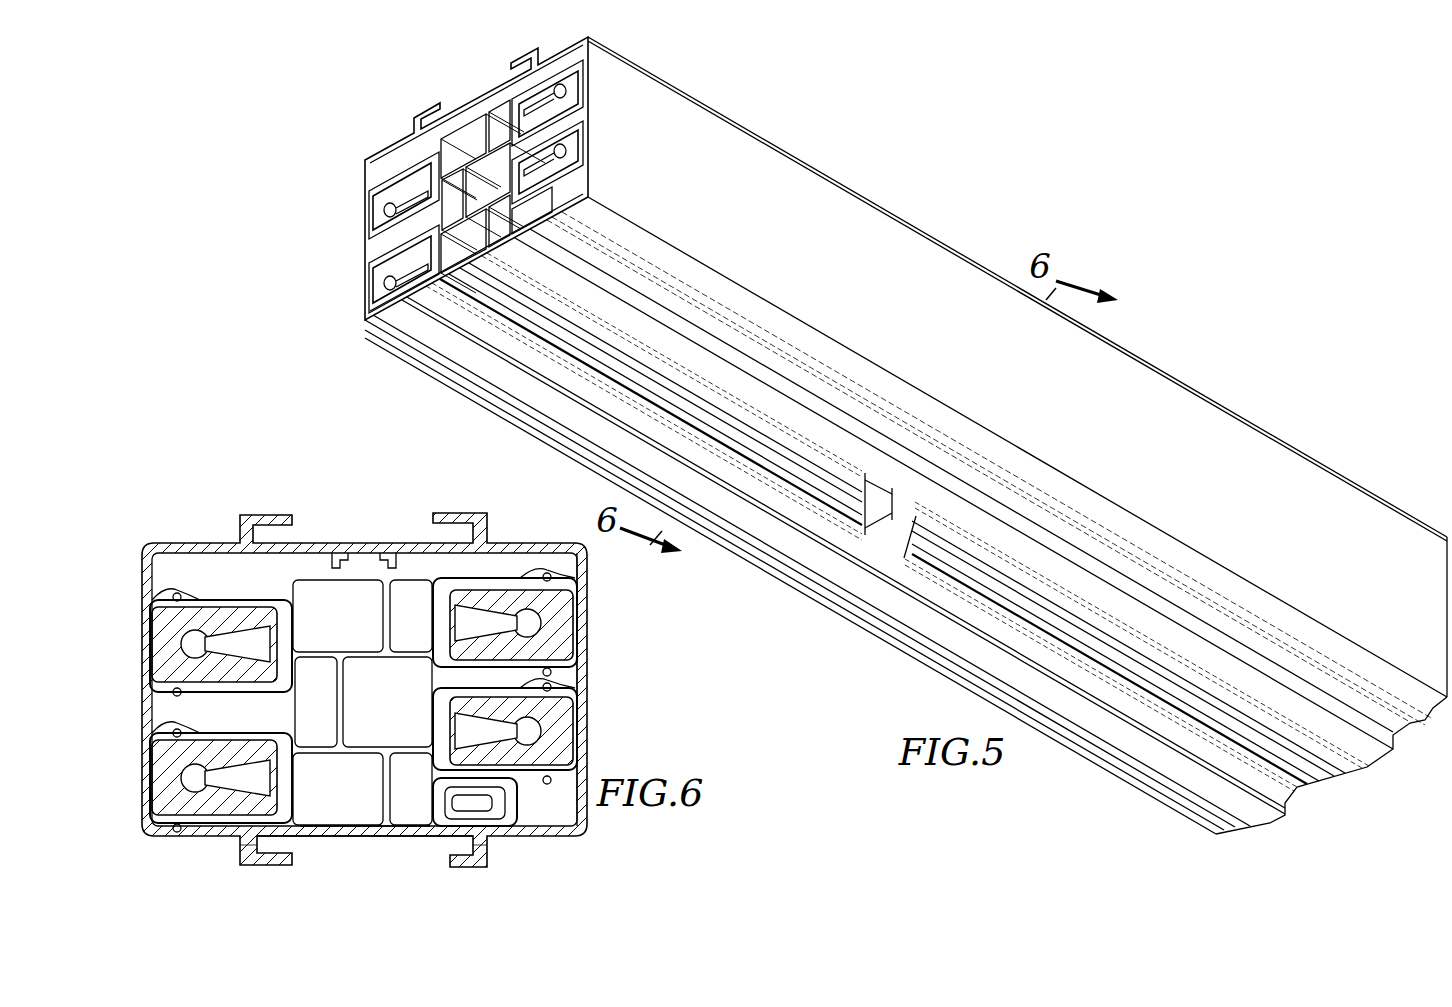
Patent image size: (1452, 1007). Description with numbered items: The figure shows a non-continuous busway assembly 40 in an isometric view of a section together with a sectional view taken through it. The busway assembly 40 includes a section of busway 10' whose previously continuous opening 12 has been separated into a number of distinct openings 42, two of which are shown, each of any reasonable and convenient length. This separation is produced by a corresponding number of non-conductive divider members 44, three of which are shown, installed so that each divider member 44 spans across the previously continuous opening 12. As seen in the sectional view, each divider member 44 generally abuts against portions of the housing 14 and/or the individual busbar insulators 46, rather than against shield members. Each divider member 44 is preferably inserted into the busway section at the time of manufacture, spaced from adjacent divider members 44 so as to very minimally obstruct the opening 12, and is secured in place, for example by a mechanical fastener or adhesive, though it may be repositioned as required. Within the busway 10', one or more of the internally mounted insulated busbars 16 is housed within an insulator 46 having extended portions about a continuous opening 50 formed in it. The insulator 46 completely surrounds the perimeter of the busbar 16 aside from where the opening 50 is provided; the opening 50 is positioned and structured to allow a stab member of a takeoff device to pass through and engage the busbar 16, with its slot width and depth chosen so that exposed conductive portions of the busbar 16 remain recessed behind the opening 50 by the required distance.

In FIG. 5, the busway 10' is at (1288, 581).
In FIG. 5, the continuous opening 12 is at (890, 592).
In FIG. 6, the continuous opening 12 is at (407, 862).
In FIG. 5, the housing 14 is at (757, 150).
In FIG. 6, the housing 14 is at (588, 584).
In FIG. 5, the busbar 16 is at (588, 122).
In FIG. 6, the busbar 16 is at (158, 625).
In FIG. 5, the busway assembly 40 is at (1215, 242).
In FIG. 6, the busway assembly 40 is at (250, 488).
In FIG. 5, the opening 42 is at (583, 355).
In FIG. 6, the opening 42 is at (330, 840).
In FIG. 5, the divider member 44 is at (467, 290).
In FIG. 6, the insulator 46 is at (221, 603).
In FIG. 6, the continuous opening 50 is at (293, 628).